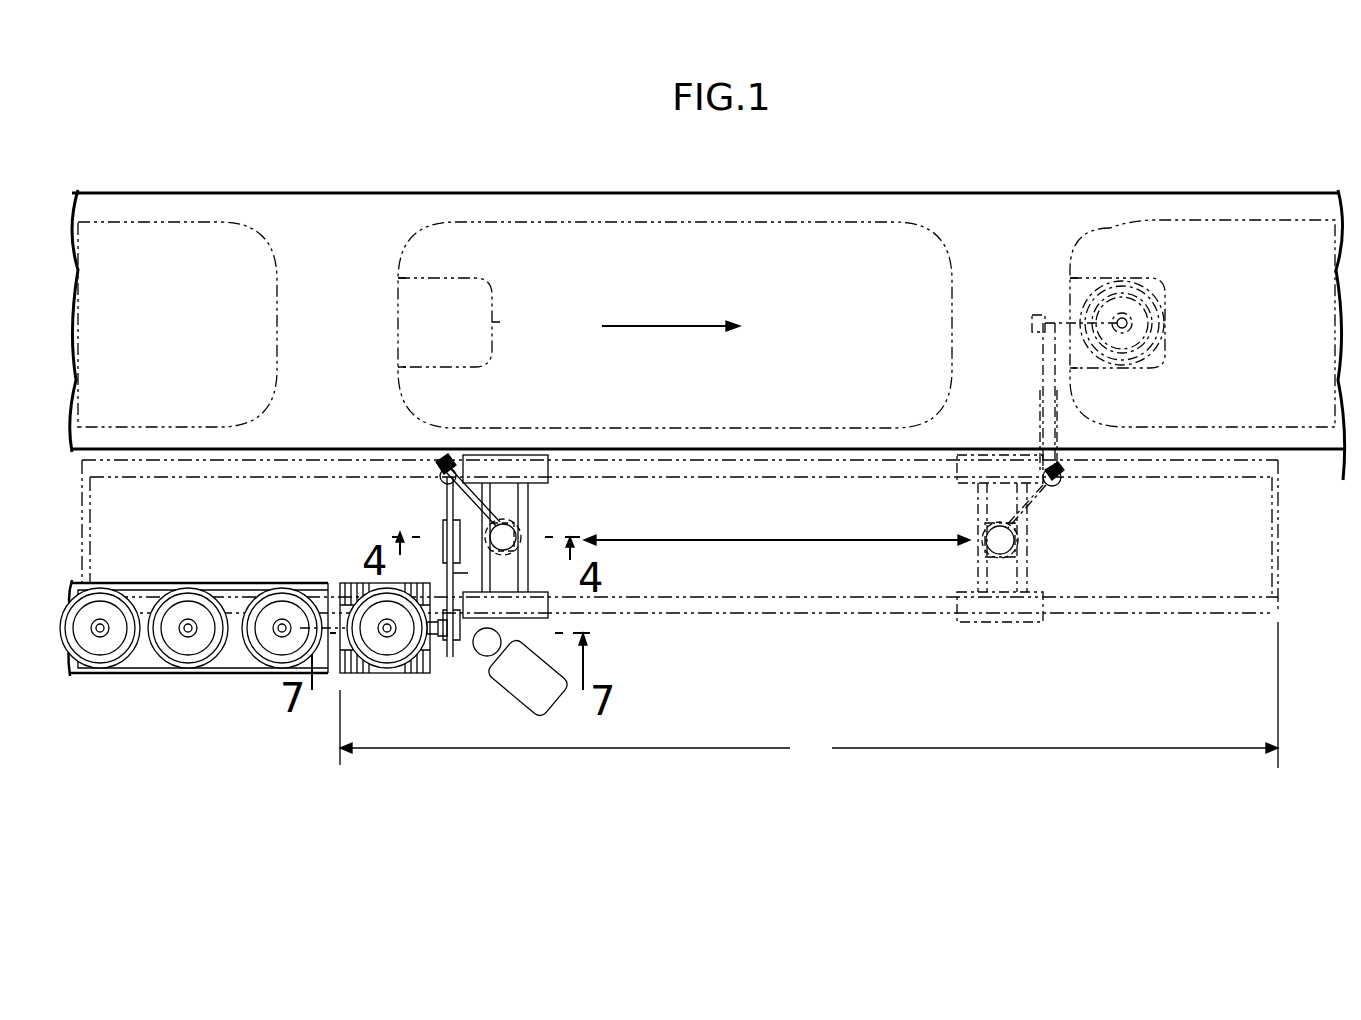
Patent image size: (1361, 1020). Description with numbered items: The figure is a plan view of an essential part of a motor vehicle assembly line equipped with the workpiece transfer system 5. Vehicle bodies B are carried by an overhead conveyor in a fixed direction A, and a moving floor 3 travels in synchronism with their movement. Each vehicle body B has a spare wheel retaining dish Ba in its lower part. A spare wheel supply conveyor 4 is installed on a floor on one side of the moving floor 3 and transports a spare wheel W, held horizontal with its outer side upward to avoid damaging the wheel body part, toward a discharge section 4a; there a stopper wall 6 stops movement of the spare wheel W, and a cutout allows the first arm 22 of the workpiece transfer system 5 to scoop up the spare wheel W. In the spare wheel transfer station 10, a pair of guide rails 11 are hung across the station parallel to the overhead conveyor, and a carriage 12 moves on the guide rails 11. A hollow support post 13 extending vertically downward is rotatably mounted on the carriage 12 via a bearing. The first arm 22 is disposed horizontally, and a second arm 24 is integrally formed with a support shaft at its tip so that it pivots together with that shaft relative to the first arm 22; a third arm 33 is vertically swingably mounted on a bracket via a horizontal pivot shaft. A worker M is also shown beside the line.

The moving floor 3 is at (1065, 193).
The vehicle body B is at (277, 300).
The spare wheel retaining dish Ba is at (492, 326).
The fixed direction A is at (632, 326).
The guide rails 11 is at (787, 475).
The workpiece transfer system 5 is at (510, 438).
The carriage 12 is at (525, 568).
The support post 13 is at (512, 522).
The first arm 22 is at (483, 505).
The second arm 24 is at (445, 502).
The stopper wall 6 is at (432, 600).
The worker M is at (560, 690).
The spare wheel supply conveyor 4 is at (207, 632).
The spare wheel W is at (100, 585).
The discharge section 4a is at (377, 658).
The third arm 33 is at (395, 655).
The spare wheel transfer station 10 is at (809, 695).